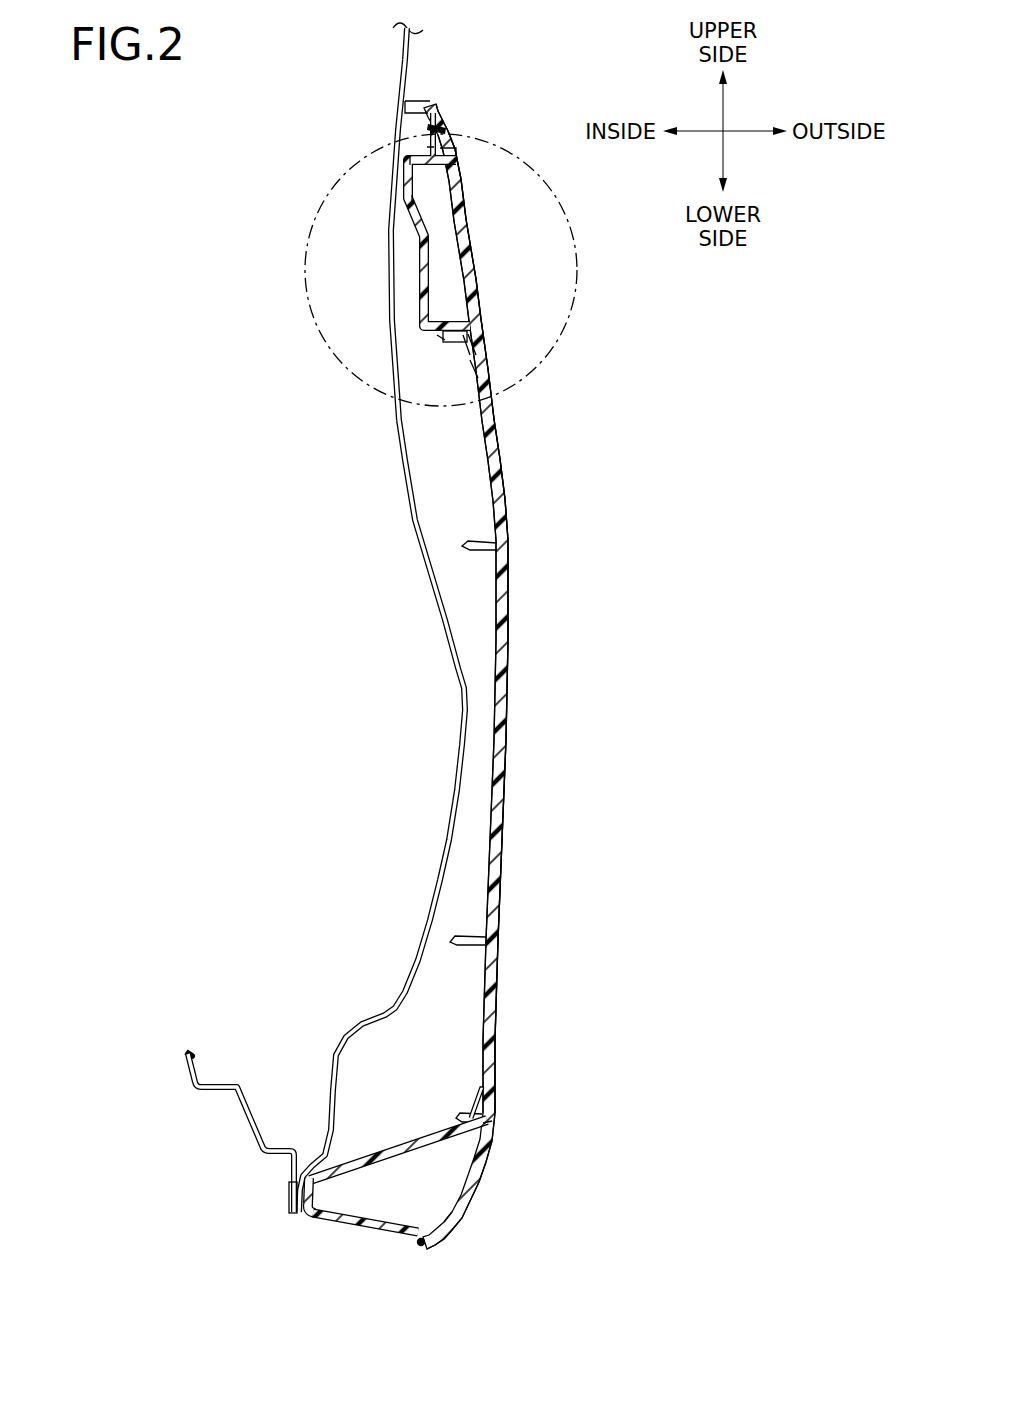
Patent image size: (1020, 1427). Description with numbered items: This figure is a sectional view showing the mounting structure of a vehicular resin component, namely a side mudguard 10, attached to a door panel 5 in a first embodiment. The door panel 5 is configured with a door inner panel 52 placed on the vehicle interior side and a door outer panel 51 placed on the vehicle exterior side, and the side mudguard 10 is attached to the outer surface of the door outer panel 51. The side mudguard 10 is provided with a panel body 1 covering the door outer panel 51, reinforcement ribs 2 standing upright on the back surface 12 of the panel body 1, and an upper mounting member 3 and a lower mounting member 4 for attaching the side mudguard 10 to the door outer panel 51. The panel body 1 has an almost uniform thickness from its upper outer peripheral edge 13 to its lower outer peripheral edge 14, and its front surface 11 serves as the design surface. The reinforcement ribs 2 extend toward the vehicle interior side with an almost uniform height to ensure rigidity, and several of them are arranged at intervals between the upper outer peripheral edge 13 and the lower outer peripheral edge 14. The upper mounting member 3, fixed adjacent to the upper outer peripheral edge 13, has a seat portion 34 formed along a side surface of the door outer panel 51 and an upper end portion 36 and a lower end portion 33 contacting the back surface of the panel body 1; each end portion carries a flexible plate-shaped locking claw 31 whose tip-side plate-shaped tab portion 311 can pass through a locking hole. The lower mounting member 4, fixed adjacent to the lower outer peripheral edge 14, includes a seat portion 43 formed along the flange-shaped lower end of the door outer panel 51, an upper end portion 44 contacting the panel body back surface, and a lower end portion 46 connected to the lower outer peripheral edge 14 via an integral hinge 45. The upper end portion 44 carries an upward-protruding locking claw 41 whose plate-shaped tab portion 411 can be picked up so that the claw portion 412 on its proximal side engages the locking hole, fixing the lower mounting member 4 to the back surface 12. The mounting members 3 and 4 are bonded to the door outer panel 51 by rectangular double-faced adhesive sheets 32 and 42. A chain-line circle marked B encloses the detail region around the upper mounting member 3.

The panel body 1 is at (505, 516).
The side mudguard 10 is at (508, 470).
The front surface 11 is at (504, 623).
The back surface 12 is at (500, 640).
The upper outer peripheral edge 13 is at (413, 102).
The lower outer peripheral edge 14 is at (446, 1230).
The reinforcement ribs 2 is at (405, 140).
The upper mounting member 3 is at (408, 238).
The locking claw 31 is at (440, 142).
The plate-shaped tab portion 311 is at (420, 133).
The adhesive sheet 32 is at (413, 163).
The lower end portion 33 is at (447, 307).
The seat portion 34 is at (412, 200).
The upper end portion 36 is at (436, 175).
The lower mounting member 4 is at (400, 1161).
The locking claw 41 is at (482, 1112).
The plate-shaped tab portion 411 is at (478, 1092).
The claw portion 412 is at (487, 1121).
The adhesive sheet 42 is at (288, 1201).
The seat portion 43 is at (320, 1222).
The upper end portion 44 is at (383, 1150).
The integral hinge 45 is at (418, 1243).
The lower end portion 46 is at (373, 1228).
The door panel 5 is at (418, 66).
The door outer panel 51 is at (458, 762).
The door inner panel 52 is at (188, 1062).
The detail region B is at (304, 290).